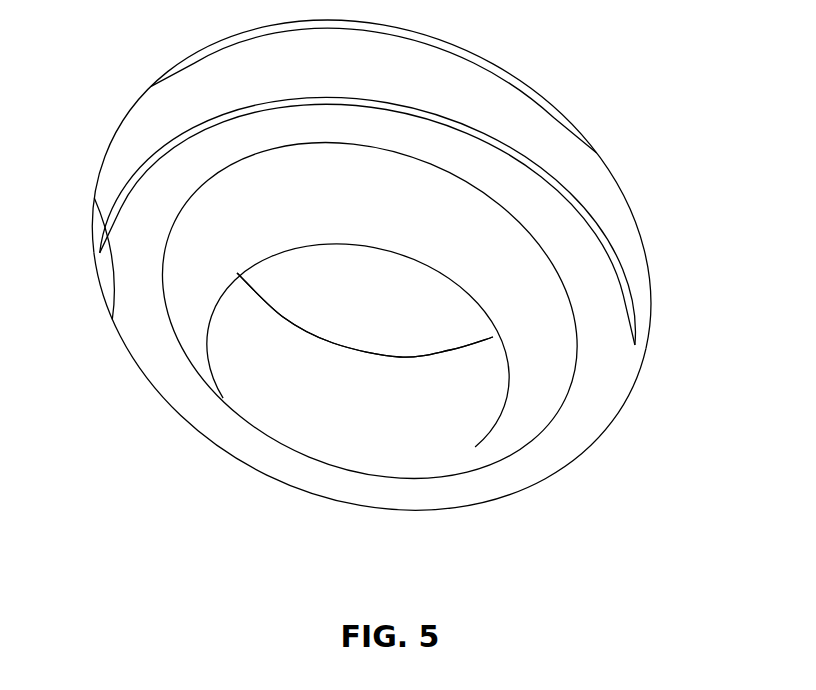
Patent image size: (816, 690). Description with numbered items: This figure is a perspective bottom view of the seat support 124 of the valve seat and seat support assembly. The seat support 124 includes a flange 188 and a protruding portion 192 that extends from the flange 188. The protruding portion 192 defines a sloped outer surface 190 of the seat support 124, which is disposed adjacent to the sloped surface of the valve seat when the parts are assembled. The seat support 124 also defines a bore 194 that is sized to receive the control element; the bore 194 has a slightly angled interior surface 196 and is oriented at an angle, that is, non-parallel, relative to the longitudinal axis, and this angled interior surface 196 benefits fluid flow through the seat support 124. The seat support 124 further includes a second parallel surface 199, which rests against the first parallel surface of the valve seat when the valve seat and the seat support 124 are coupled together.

The seat support 124 is at (547, 117).
The flange 188 is at (617, 373).
The sloped outer surface 190 is at (533, 393).
The protruding portion 192 is at (500, 440).
The bore 194 is at (343, 450).
The angled interior surface 196 is at (258, 407).
The second parallel surface 199 is at (117, 260).